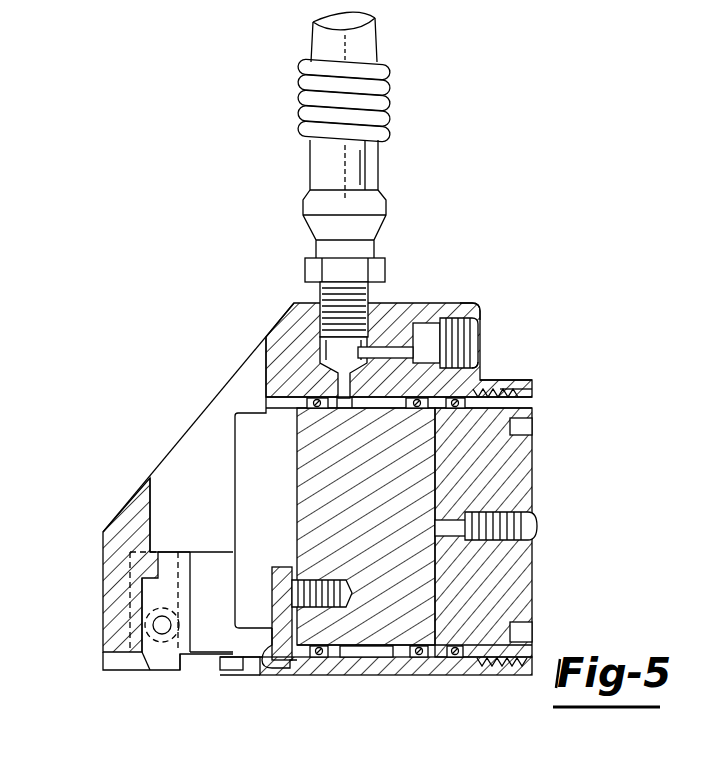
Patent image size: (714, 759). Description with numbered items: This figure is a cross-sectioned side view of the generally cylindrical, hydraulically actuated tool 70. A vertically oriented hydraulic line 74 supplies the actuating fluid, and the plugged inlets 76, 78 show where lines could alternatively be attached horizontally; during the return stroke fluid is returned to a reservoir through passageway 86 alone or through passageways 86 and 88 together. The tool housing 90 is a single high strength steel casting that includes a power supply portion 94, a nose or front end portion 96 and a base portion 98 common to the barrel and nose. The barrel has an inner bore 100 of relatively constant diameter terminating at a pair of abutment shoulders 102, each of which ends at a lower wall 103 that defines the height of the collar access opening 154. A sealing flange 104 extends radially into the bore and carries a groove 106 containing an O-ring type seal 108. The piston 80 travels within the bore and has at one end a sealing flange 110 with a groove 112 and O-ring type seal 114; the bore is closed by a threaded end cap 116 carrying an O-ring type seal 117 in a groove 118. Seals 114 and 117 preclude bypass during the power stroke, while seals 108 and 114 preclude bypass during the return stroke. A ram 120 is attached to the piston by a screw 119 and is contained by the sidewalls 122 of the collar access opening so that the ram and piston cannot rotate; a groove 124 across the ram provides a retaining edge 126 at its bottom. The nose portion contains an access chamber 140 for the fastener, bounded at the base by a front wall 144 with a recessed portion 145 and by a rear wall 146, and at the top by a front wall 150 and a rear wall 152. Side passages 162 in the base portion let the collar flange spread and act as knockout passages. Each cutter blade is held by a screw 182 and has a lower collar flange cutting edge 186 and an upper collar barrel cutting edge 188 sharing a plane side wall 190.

The hydraulically actuated tool 70 is at (481, 252).
The hydraulic line 74 is at (380, 148).
The inlet 76 is at (538, 525).
The inlet 78 is at (482, 333).
The piston 80 is at (400, 493).
The passageway 86 is at (480, 375).
The passageway 88 is at (360, 352).
The tool housing 90 is at (283, 319).
The power supply portion 94 is at (462, 305).
The nose or front end portion 96 is at (103, 541).
The base portion 98 is at (430, 676).
The inner bore 100 is at (478, 383).
The abutment shoulders 102 is at (296, 442).
The lower wall 103 is at (197, 553).
The sealing flange 104 is at (300, 412).
The groove 106 is at (316, 400).
The O-ring type seal 108 is at (298, 400).
The sealing flange 110 is at (420, 410).
The groove 112 is at (443, 612).
The O-ring type seal 114 is at (467, 637).
The end cap 116 is at (535, 455).
The O-ring type seal 117 is at (520, 385).
The groove 118 is at (530, 644).
The screw 119 is at (272, 588).
The ram 120 is at (283, 568).
The sidewalls 122 is at (293, 662).
The groove 124 is at (272, 648).
The retaining edge 126 is at (270, 664).
The access chamber 140 is at (186, 474).
The front wall 144 is at (128, 673).
The recessed portion 145 is at (140, 582).
The rear wall 146 is at (322, 657).
The front wall 150 is at (152, 500).
The rear wall 152 is at (262, 347).
The collar access opening 154 is at (232, 612).
The side passages 162 is at (232, 672).
The screw 182 is at (160, 627).
The lower collar flange cutting edge 186 is at (190, 672).
The upper collar barrel cutting edge 188 is at (250, 657).
The side wall 190 is at (148, 668).